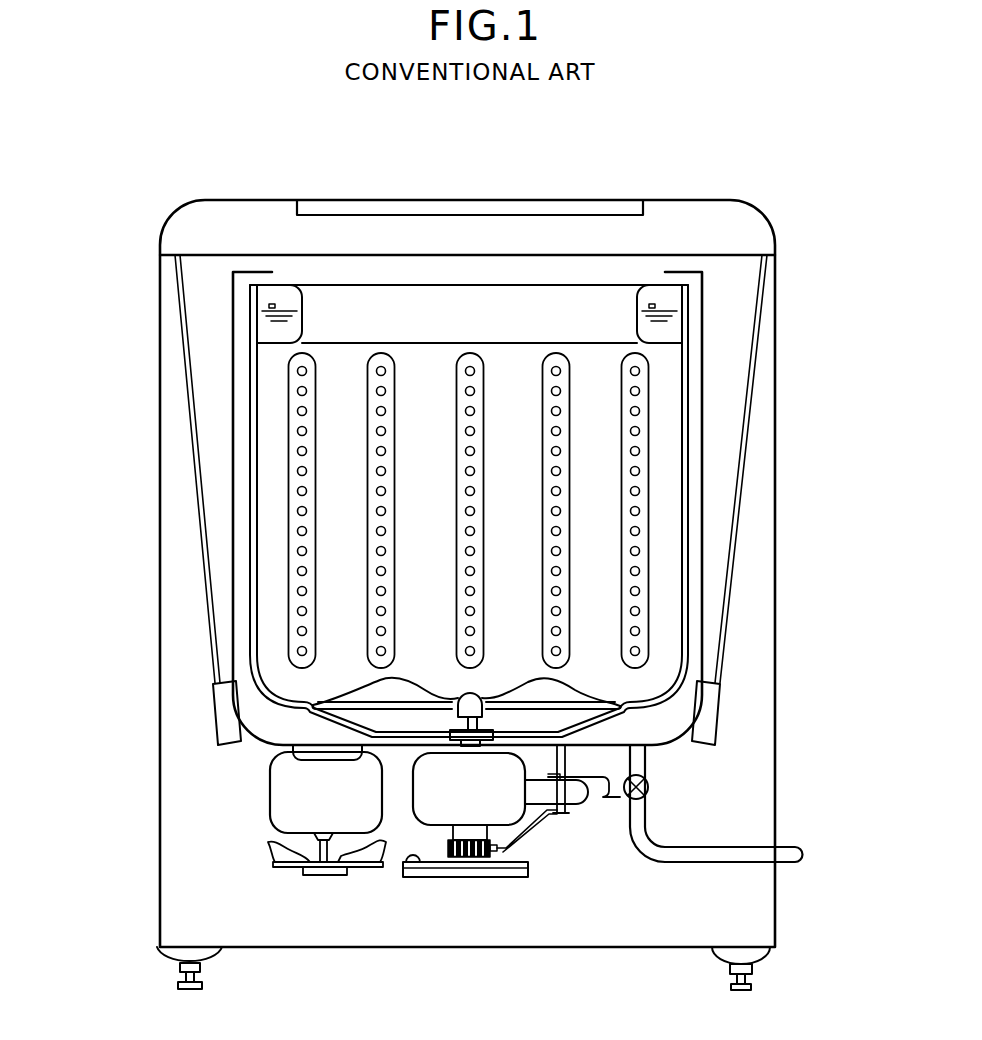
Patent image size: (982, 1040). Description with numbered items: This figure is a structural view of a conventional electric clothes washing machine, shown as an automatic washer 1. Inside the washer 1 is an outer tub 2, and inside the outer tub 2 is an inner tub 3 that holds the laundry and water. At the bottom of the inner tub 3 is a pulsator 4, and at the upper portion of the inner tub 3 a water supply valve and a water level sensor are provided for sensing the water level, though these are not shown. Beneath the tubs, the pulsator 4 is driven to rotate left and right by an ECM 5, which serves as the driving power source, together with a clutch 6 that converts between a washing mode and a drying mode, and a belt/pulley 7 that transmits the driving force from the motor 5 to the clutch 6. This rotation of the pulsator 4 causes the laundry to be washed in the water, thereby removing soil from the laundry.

The automatic washer 1 is at (775, 780).
The outer tub 2 is at (702, 432).
The inner tub 3 is at (687, 478).
The pulsator 4 is at (380, 696).
The ECM 5 is at (293, 798).
The clutch 6 is at (443, 802).
The belt/pulley 7 is at (412, 862).